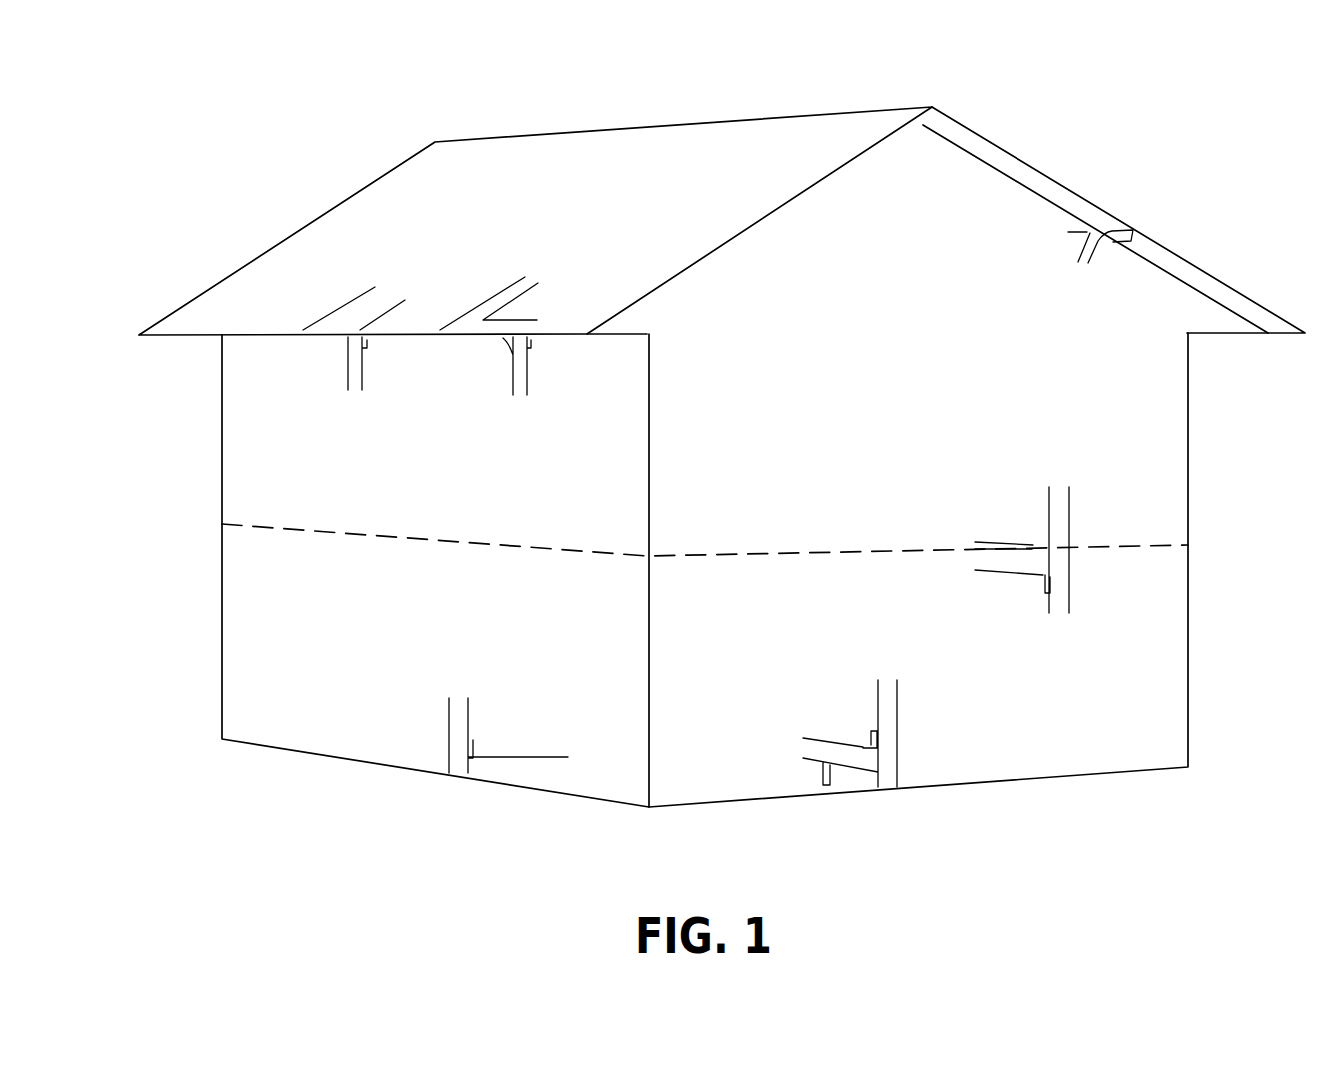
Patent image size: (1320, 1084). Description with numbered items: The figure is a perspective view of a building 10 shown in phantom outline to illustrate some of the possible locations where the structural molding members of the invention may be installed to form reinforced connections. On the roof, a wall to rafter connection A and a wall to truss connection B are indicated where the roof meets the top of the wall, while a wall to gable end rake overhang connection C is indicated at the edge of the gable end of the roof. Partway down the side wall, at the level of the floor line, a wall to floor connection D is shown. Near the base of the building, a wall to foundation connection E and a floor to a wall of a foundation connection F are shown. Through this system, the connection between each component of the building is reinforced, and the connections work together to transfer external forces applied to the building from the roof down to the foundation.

The building 10 is at (1118, 152).
The wall to rafter connection A is at (330, 307).
The wall to truss connection B is at (489, 291).
The wall to gable end rake overhang connection C is at (1156, 222).
The wall to floor connection D is at (1032, 532).
The wall to foundation connection E is at (492, 739).
The floor to wall of foundation connection F is at (855, 731).